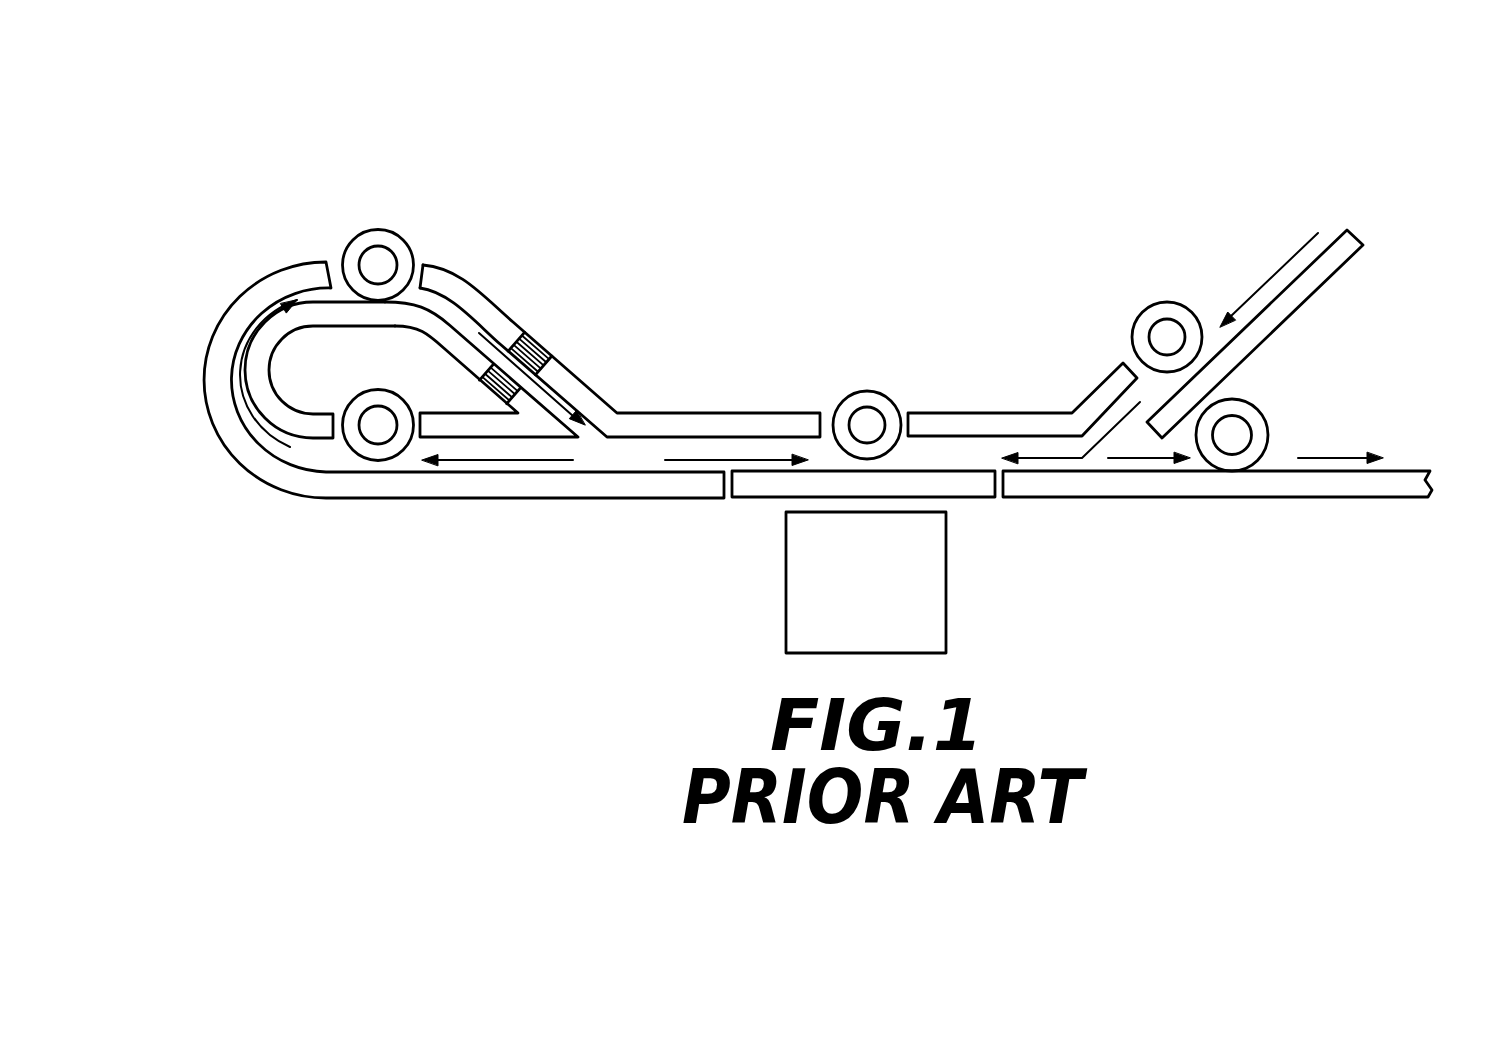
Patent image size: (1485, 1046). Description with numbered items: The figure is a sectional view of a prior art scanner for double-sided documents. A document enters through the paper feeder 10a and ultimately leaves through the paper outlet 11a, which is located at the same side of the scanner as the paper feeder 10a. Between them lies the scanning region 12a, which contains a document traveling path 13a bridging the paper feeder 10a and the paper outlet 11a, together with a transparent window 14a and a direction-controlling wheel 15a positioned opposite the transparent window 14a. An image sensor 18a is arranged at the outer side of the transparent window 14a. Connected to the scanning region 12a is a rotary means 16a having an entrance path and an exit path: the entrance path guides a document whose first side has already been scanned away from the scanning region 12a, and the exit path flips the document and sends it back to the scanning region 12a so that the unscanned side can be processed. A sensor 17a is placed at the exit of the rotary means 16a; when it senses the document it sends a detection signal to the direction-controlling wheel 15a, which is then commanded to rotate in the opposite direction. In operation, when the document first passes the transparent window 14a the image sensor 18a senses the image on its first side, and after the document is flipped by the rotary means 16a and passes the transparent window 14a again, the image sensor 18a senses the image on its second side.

The paper feeder 10a is at (1222, 268).
The paper outlet 11a is at (1312, 420).
The scanning region 12a is at (812, 352).
The document traveling path 13a is at (712, 452).
The transparent window 14a is at (985, 487).
The direction-controlling wheel 15a is at (867, 391).
The rotary means 16a is at (253, 268).
The sensor 17a is at (540, 343).
The image sensor 18a is at (923, 578).